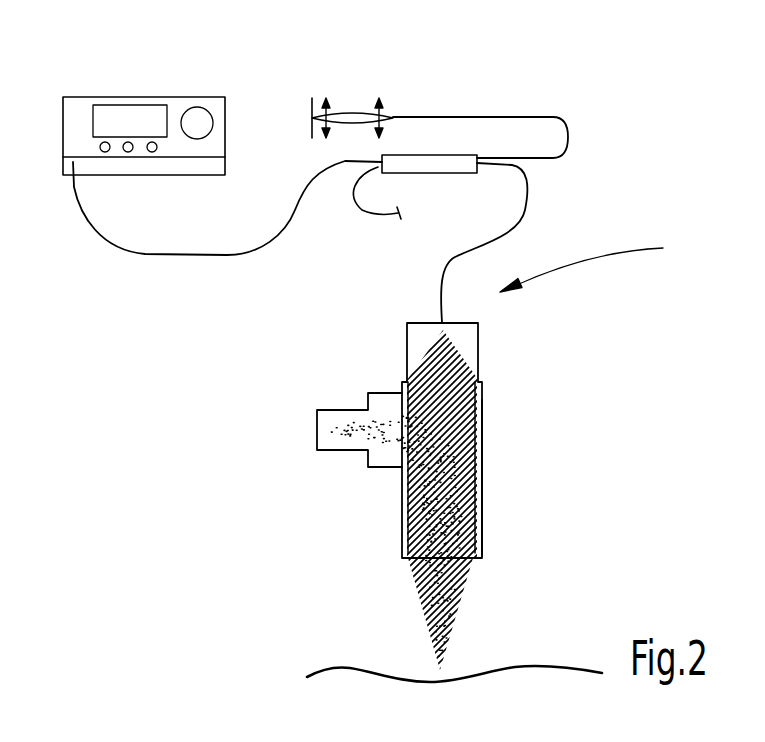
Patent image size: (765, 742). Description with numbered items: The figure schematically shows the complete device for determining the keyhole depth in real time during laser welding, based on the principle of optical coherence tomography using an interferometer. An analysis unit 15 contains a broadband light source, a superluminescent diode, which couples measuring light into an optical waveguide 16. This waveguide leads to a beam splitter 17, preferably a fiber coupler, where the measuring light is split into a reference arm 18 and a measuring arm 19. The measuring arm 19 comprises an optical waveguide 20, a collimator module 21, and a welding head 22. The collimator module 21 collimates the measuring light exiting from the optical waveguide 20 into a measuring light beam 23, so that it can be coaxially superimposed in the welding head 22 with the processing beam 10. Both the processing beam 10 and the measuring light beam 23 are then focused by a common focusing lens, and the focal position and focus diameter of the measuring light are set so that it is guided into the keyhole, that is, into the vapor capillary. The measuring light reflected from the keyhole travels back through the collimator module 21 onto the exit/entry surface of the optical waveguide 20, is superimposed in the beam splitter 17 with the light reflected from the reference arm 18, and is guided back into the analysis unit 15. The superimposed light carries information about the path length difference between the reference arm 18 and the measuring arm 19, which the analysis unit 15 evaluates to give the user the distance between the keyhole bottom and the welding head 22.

The processing beam 10 is at (437, 505).
The analysis unit 15 is at (142, 97).
The optical waveguide 16 is at (195, 257).
The beam splitter 17 is at (440, 174).
The reference arm 18 is at (467, 113).
The measuring arm 19 is at (595, 263).
The optical waveguide 20 is at (523, 212).
The collimator module 21 is at (480, 355).
The welding head 22 is at (480, 498).
The measuring light beam 23 is at (445, 373).